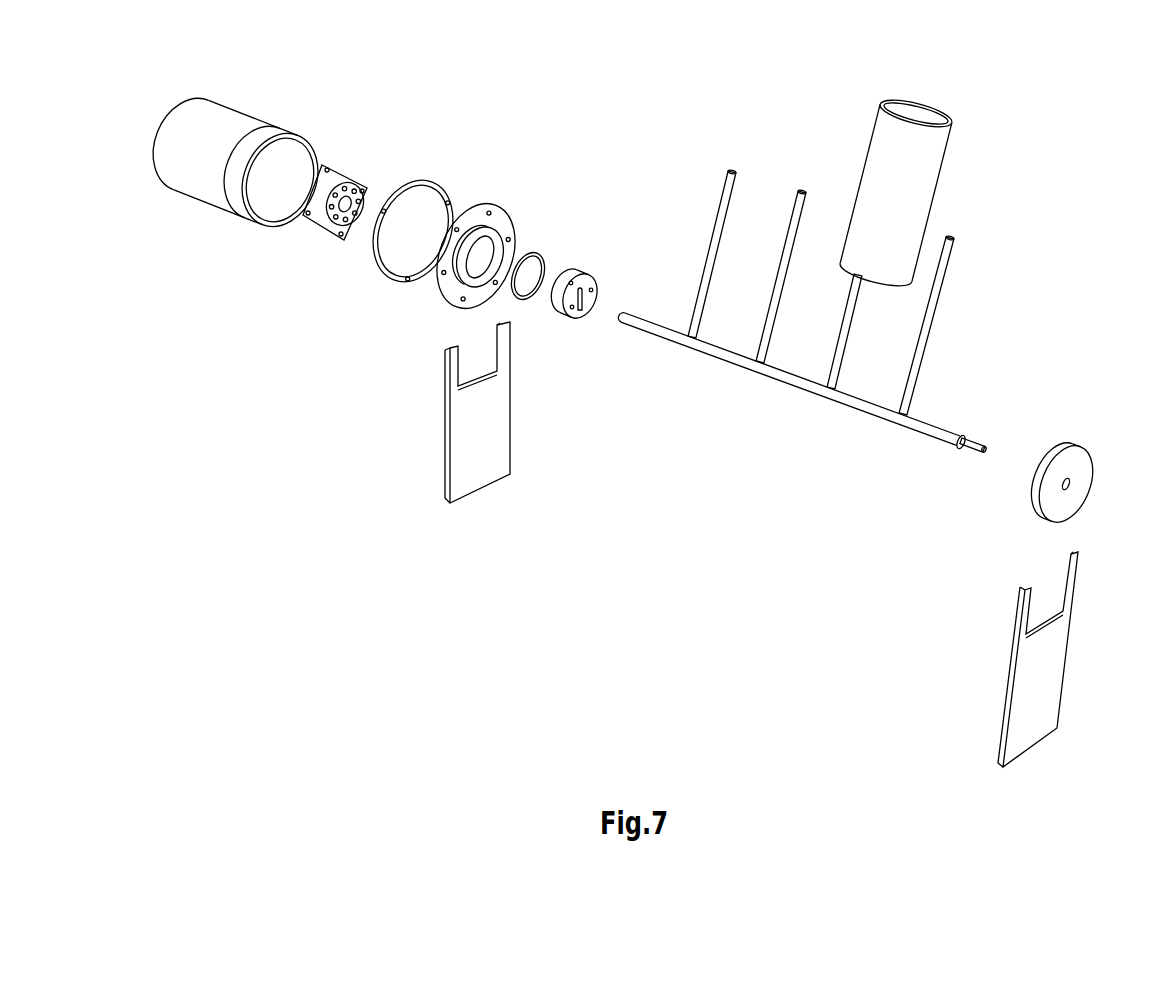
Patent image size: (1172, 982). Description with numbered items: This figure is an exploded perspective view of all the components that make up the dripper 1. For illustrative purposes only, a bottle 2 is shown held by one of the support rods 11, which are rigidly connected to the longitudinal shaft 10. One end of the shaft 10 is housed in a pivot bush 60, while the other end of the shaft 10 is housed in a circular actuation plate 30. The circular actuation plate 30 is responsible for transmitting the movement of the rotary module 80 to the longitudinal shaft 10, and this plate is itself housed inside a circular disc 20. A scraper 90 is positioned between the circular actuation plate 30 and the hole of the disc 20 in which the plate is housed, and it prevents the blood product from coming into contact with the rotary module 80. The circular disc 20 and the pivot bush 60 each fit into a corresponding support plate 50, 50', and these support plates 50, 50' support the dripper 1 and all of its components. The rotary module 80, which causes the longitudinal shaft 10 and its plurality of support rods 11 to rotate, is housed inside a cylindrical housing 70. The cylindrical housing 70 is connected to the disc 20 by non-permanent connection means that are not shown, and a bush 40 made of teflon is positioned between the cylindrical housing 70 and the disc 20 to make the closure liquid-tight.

The dripper 1 is at (655, 118).
The bottle 2 is at (930, 112).
The longitudinal shaft 10 is at (933, 423).
The support rod 11 is at (952, 228).
The circular disc 20 is at (497, 203).
The circular actuation plate 30 is at (590, 272).
The bush 40 is at (432, 183).
The support plate 50 is at (443, 433).
The support plate 50' is at (1008, 678).
The pivot bush 60 is at (1073, 443).
The cylindrical housing 70 is at (257, 128).
The rotary module 80 is at (349, 162).
The scraper 90 is at (535, 253).